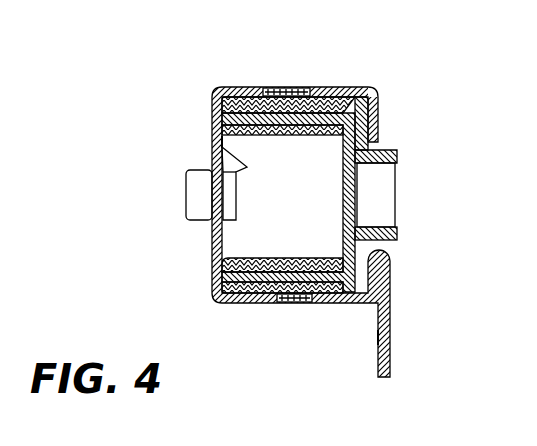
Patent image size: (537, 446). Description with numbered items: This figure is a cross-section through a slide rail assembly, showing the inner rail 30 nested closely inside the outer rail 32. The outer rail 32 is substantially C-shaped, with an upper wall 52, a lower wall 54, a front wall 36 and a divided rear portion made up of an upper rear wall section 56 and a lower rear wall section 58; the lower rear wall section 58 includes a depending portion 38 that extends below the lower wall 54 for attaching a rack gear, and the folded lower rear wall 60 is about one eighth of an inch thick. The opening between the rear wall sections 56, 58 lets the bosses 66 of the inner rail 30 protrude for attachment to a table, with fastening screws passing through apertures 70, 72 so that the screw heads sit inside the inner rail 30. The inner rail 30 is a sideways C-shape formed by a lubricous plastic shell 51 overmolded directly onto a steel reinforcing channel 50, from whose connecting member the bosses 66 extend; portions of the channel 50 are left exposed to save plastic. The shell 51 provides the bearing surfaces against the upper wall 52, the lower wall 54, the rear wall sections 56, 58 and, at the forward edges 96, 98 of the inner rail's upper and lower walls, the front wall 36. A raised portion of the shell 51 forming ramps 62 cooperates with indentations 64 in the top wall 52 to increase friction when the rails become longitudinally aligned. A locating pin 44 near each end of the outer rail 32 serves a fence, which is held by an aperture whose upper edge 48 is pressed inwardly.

The inner rail 30 is at (365, 87).
The outer rail 32 is at (227, 90).
The front wall 36 is at (222, 122).
The depending portion 38 is at (390, 358).
The locating pin 44 is at (186, 198).
The upper edge of aperture 48 is at (238, 154).
The inner reinforcing channel 50 is at (342, 234).
The plastic shell 51 is at (455, 183).
The upper wall of outer rail 52 is at (342, 87).
The lower wall of outer rail 54 is at (232, 305).
The upper rear wall section 56 is at (380, 112).
The lower rear wall section 58 is at (378, 337).
The folded lower rear wall 60 is at (392, 263).
The ramps 62 is at (258, 88).
The indentations 64 is at (302, 88).
The bosses 66 is at (396, 210).
The aperture 70 is at (396, 175).
The aperture 72 is at (343, 182).
The forward edge of upper wall 96 is at (222, 142).
The forward edge of lower wall 98 is at (222, 269).